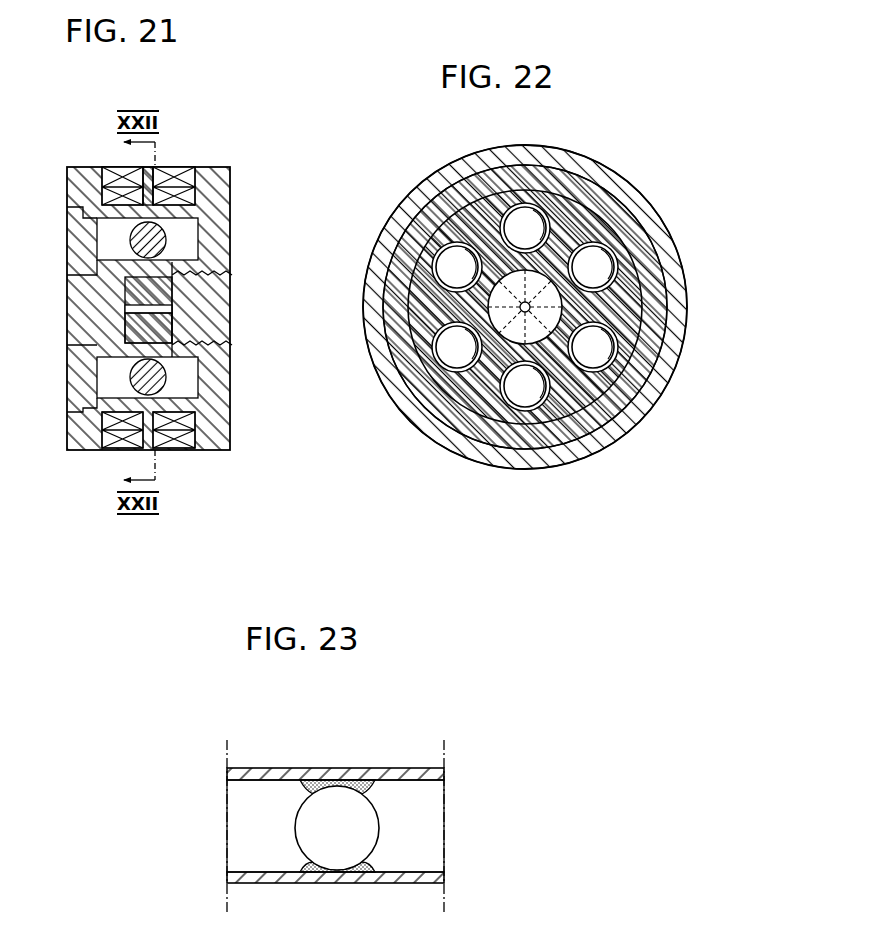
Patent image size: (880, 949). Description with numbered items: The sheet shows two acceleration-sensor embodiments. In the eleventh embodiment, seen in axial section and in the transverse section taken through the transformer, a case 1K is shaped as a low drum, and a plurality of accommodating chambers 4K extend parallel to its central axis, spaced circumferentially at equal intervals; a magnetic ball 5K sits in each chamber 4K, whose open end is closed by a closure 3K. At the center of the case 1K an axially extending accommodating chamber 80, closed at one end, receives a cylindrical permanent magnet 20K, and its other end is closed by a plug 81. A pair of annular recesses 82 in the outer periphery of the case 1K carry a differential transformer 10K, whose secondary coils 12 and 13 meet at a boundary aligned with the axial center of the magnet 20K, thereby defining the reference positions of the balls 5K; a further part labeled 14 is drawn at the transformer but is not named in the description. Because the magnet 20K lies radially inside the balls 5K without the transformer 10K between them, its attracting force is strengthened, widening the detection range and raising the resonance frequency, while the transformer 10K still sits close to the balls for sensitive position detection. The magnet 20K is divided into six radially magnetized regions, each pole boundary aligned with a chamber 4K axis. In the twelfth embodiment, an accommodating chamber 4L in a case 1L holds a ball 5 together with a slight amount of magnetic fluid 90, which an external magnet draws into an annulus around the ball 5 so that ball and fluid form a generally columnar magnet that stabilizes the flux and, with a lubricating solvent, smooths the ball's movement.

In FIG. 21, the case 1K is at (230, 210).
In FIG. 22, the case 1K is at (618, 317).
In FIG. 21, the closure 3K is at (72, 257).
In FIG. 21, the accommodating chamber 4K is at (190, 242).
In FIG. 22, the accommodating chamber 4K is at (436, 246).
In FIG. 21, the magnetic ball 5K is at (127, 243).
In FIG. 22, the magnetic ball 5K is at (446, 272).
In FIG. 21, the differential transformer 10K is at (118, 162).
In FIG. 22, the differential transformer 10K is at (688, 274).
In FIG. 21, the secondary coil 12 is at (107, 195).
In FIG. 21, the secondary coil 13 is at (197, 196).
In FIG. 22, the secondary coil 13 is at (658, 297).
In FIG. 21, the coil bobbin 14 is at (110, 167).
In FIG. 22, the coil bobbin 14 is at (672, 233).
In FIG. 21, the permanent magnet 20K is at (172, 294).
In FIG. 22, the permanent magnet 20K is at (440, 410).
In FIG. 21, the accommodating chamber 80 is at (133, 335).
In FIG. 22, the accommodating chamber 80 is at (488, 307).
In FIG. 21, the plug 81 is at (218, 322).
In FIG. 21, the annular recess 82 is at (105, 172).
In FIG. 23, the case 1L is at (390, 769).
In FIG. 23, the accommodating chamber 4L is at (415, 795).
In FIG. 23, the ball 5 is at (360, 832).
In FIG. 23, the magnetic fluid 90 is at (337, 783).